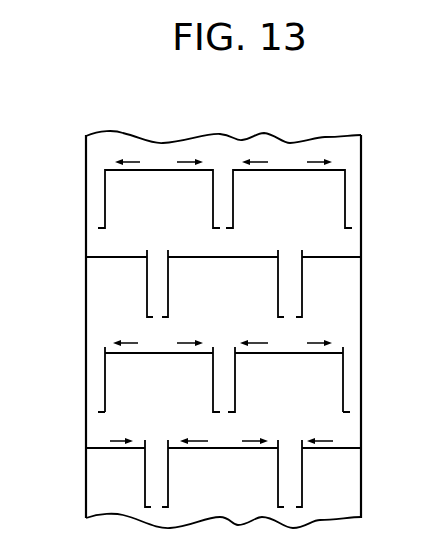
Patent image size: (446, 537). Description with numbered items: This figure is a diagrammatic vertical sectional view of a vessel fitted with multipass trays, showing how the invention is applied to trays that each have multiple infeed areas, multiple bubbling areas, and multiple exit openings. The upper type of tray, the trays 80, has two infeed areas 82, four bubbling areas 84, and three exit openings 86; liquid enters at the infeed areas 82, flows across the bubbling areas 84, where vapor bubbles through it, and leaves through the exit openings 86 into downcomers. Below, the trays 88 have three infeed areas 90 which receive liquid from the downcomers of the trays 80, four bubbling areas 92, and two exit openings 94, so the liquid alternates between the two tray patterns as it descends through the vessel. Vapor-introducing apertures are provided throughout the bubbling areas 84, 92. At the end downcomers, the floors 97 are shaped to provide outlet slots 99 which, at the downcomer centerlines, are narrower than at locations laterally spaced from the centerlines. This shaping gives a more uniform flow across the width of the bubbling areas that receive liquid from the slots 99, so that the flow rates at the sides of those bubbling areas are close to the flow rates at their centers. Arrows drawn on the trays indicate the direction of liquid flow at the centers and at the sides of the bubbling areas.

The trays 80 is at (288, 170).
The infeed areas 82 is at (155, 353).
The bubbling areas 84 is at (180, 353).
The exit openings 86 is at (92, 360).
The trays 88 is at (253, 257).
The infeed areas 90 is at (120, 448).
The bubbling areas 92 is at (97, 443).
The exit openings 94 is at (157, 447).
The floors 97 is at (100, 412).
The outlet slots 99 is at (97, 411).